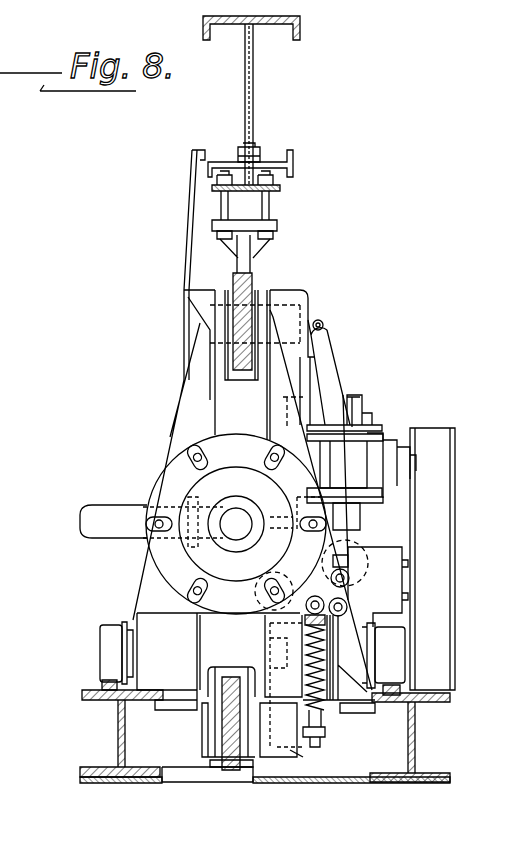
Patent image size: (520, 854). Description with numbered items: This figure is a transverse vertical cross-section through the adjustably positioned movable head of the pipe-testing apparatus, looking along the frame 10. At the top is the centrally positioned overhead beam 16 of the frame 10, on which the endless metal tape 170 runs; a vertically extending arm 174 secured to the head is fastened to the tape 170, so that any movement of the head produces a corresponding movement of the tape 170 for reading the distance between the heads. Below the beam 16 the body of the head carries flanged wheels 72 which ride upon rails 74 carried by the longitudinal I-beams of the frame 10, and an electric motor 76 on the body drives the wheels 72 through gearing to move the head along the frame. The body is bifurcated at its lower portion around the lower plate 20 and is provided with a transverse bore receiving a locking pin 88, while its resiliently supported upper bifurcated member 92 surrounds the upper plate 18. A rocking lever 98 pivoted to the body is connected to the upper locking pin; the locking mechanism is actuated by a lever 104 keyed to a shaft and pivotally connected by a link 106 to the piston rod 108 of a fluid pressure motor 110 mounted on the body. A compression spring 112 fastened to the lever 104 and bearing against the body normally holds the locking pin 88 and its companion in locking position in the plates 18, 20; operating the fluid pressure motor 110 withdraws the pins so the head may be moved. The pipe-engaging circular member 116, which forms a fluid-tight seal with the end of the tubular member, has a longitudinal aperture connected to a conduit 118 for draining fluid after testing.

The frame 10 is at (112, 725).
The overhead beam 16 is at (253, 96).
The plate 18 is at (252, 277).
The plate 20 is at (232, 677).
The flanged wheels 72 is at (108, 657).
The rails 74 is at (102, 685).
The electric motor 76 is at (353, 405).
The locking pin 88 is at (275, 747).
The bifurcated member 92 is at (310, 305).
The rocking lever 98 is at (332, 372).
The lever 104 is at (345, 543).
The link 106 is at (347, 583).
The piston rod 108 is at (348, 523).
The fluid pressure motor 110 is at (358, 466).
The compression spring 112 is at (318, 717).
The circular member 116 is at (173, 453).
The conduit 118 is at (105, 512).
The endless metal tape 170 is at (288, 146).
The vertically extending arm 174 is at (192, 210).